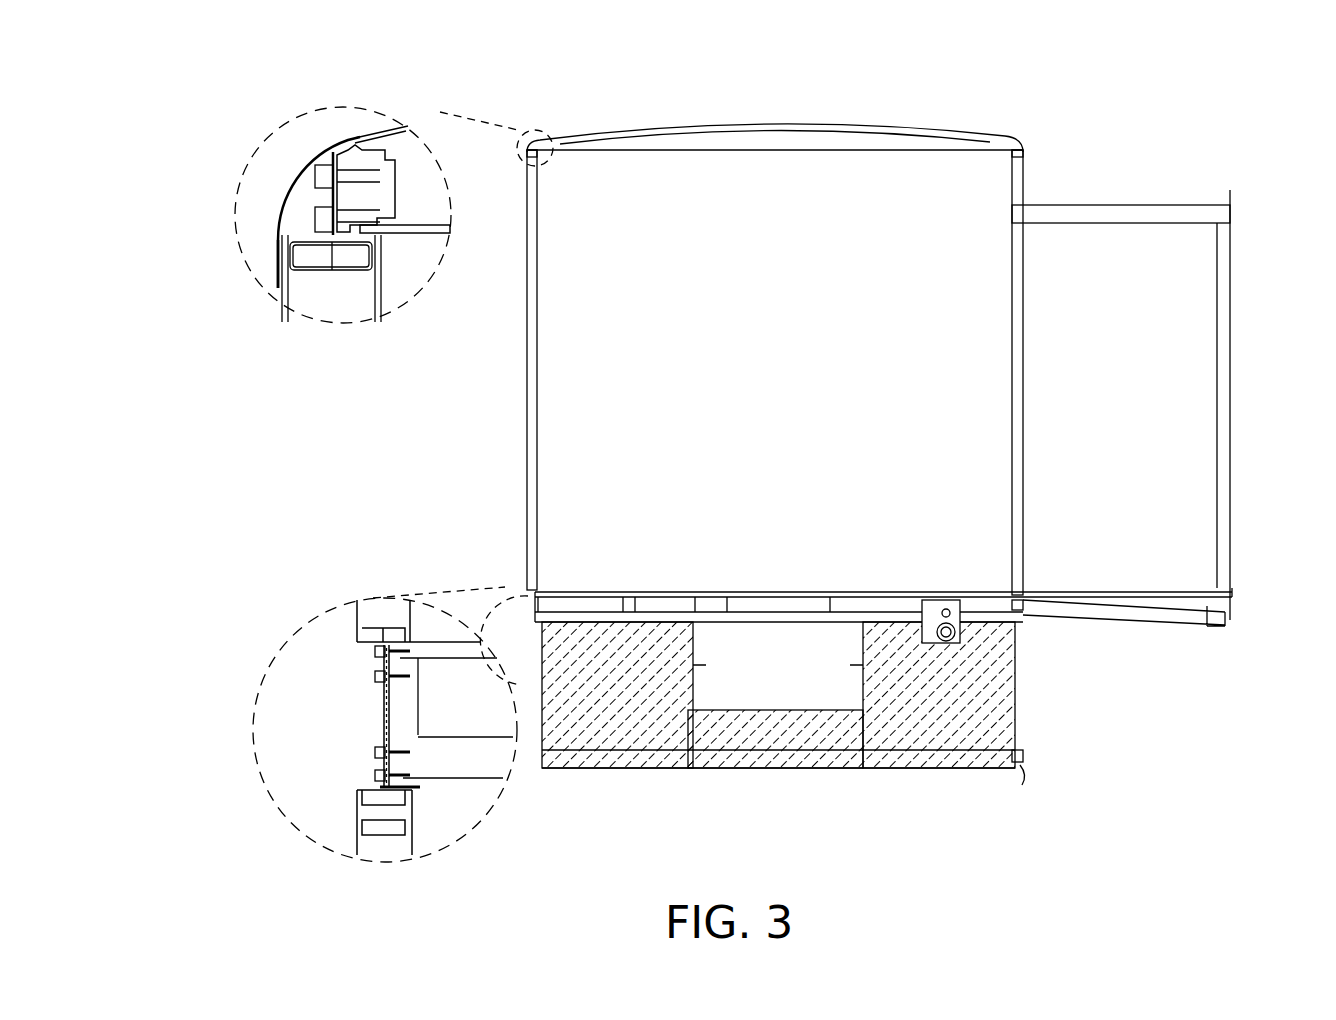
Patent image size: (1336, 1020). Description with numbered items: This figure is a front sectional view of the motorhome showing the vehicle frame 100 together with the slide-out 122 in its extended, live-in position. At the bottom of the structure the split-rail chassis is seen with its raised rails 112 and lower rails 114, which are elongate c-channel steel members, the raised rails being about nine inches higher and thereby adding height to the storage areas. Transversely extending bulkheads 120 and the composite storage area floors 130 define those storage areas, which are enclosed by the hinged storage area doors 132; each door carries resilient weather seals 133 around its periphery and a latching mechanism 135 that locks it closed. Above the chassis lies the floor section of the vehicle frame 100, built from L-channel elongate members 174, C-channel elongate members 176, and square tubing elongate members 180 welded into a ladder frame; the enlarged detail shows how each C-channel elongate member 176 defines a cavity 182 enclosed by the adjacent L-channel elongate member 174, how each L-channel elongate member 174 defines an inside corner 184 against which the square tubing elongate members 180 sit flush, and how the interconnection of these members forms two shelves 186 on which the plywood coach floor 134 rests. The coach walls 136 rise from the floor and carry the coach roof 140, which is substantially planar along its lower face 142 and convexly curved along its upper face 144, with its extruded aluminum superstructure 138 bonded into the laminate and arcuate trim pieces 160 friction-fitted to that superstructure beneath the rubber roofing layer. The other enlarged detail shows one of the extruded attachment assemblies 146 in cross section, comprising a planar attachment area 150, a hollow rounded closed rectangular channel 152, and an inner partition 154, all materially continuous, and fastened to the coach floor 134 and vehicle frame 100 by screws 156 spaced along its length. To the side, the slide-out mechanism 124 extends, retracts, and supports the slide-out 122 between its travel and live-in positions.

The vehicle frame 100 is at (625, 595).
The raised rails 112 is at (875, 740).
The lower rails 114 is at (720, 770).
The bulkheads 120 is at (962, 755).
The slide-out 122 is at (1232, 345).
The slide-out mechanism 124 is at (1052, 615).
The storage area floors 130 is at (635, 770).
The storage area doors 132 is at (1028, 712).
The weather seals 133 is at (1030, 728).
The coach floor 134 is at (580, 595).
The latching mechanism 135 is at (1025, 770).
The coach walls 136 is at (527, 432).
The aluminum superstructure 138 is at (362, 145).
The coach roof 140 is at (945, 145).
The lower face 142 is at (978, 153).
The upper face 144 is at (845, 125).
The attachment assemblies 146 is at (375, 262).
The planar attachment area 150 is at (325, 190).
The rectangular channel 152 is at (278, 275).
The inner partition 154 is at (272, 235).
The screws 156 is at (320, 168).
The trim pieces 160 is at (333, 160).
The L-channel elongate members 174 is at (380, 733).
The C-channel elongate members 176 is at (382, 700).
The square tubing elongate members 180 is at (425, 760).
The cavity 182 is at (440, 770).
The inside corner 184 is at (410, 790).
The shelves 186 is at (410, 652).